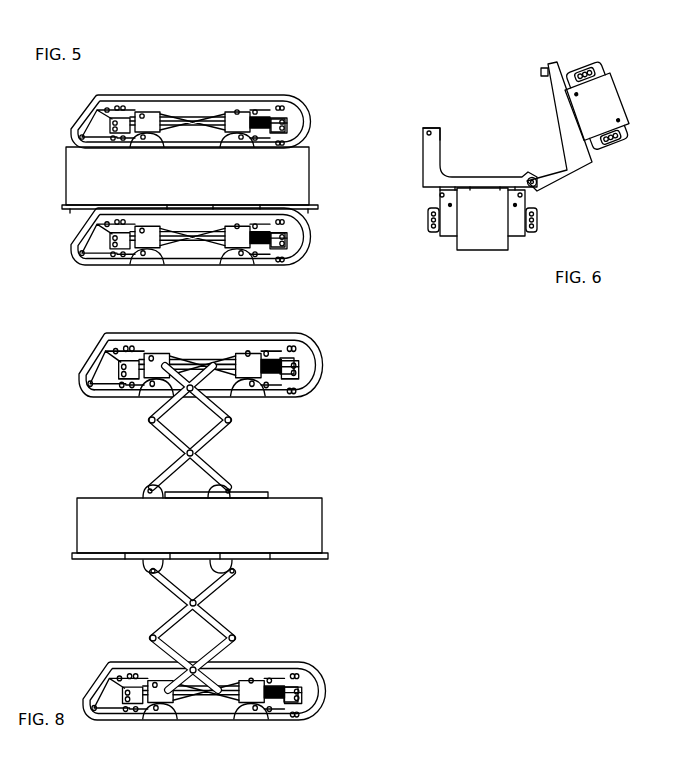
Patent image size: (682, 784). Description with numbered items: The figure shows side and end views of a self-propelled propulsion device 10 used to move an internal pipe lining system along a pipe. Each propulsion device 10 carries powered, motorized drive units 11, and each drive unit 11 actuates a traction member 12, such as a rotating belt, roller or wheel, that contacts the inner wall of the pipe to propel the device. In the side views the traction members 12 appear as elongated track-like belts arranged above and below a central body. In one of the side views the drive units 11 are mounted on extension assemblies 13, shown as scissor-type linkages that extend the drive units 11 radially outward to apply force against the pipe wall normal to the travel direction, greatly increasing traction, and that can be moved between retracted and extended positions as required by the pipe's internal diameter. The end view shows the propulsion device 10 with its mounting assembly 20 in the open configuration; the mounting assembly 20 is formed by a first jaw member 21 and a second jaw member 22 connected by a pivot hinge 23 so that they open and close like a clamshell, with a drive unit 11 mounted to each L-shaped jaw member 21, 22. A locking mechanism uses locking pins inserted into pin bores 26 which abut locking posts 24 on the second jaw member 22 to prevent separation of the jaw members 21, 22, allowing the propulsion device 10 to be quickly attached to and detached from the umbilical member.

In FIG. 5, the propulsion device 10 is at (71, 252).
In FIG. 6, the propulsion device 10 is at (463, 274).
In FIG. 8, the propulsion device 10 is at (69, 566).
In FIG. 5, the drive unit 11 is at (300, 120).
In FIG. 6, the drive unit 11 is at (613, 150).
In FIG. 8, the drive unit 11 is at (196, 356).
In FIG. 5, the traction member 12 is at (213, 95).
In FIG. 6, the traction member 12 is at (617, 76).
In FIG. 8, the traction member 12 is at (252, 334).
In FIG. 8, the extension assembly 13 is at (222, 440).
In FIG. 8, the mounting assembly 20 is at (316, 522).
In FIG. 6, the first jaw member 21 is at (468, 177).
In FIG. 5, the second jaw member 22 is at (66, 156).
In FIG. 6, the second jaw member 22 is at (561, 168).
In FIG. 5, the pivot hinge 23 is at (69, 208).
In FIG. 6, the pivot hinge 23 is at (538, 190).
In FIG. 8, the pivot hinge 23 is at (320, 558).
In FIG. 6, the locking post 24 is at (542, 72).
In FIG. 6, the pin bore 26 is at (437, 128).